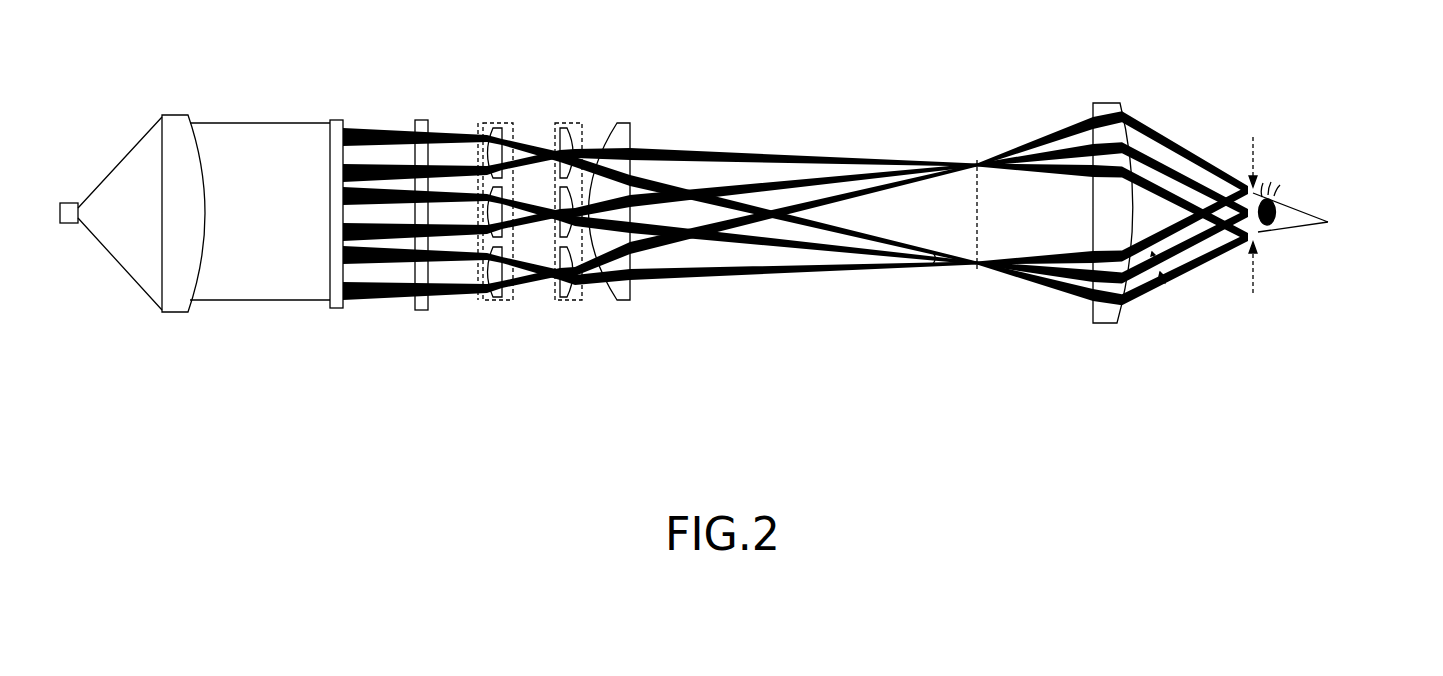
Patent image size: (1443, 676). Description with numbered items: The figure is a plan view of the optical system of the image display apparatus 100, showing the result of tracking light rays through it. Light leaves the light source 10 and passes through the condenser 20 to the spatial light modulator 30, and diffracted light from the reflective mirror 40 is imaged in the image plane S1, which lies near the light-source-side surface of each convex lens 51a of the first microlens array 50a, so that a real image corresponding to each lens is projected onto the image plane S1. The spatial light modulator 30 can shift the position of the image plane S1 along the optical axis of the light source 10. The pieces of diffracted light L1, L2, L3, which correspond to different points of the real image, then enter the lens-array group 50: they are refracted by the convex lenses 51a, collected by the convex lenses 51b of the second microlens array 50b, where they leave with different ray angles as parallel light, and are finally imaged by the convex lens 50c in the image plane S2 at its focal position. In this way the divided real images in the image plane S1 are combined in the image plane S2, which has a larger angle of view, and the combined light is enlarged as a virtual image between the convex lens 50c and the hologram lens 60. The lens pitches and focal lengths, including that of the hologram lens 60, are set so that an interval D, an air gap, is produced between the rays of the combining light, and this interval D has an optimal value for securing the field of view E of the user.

The light source 10 is at (68, 224).
The condenser 20 is at (176, 312).
The spatial light modulator 30 is at (337, 309).
The reflective mirror 40 is at (418, 304).
The lens-array group 50 is at (561, 236).
The first microlens array 50a is at (503, 219).
The second microlens array 50b is at (573, 219).
The convex lens 50c is at (615, 235).
The convex lens 51a is at (496, 128).
The convex lens 51b is at (566, 128).
The hologram lens 60 is at (1105, 324).
The image display apparatus 100 is at (1139, 87).
The image plane S1 is at (480, 125).
The image plane S2 is at (975, 162).
The diffracted light L1 is at (357, 128).
The diffracted light L2 is at (372, 152).
The diffracted light L3 is at (400, 160).
The interval D is at (1163, 275).
The field of view E is at (1339, 215).